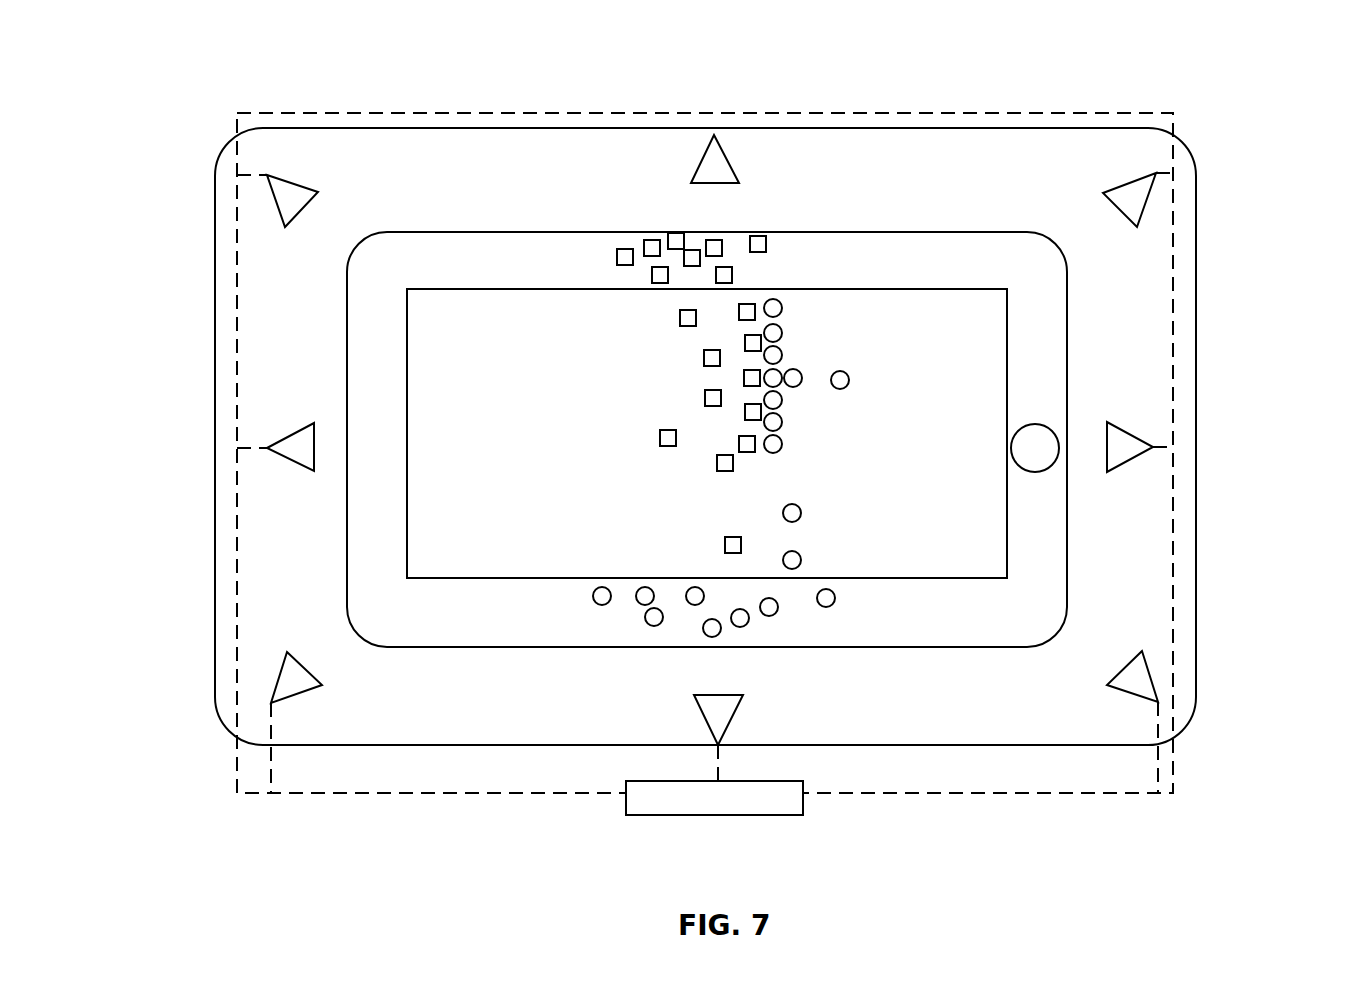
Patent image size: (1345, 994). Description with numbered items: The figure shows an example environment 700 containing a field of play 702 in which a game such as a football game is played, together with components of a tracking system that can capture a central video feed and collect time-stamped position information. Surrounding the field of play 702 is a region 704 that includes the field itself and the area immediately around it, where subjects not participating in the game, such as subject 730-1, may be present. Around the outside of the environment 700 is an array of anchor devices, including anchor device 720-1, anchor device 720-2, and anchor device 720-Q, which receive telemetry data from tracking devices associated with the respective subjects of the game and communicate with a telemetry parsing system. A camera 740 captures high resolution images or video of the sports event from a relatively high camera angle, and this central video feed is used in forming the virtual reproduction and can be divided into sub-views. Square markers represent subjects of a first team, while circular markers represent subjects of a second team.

The environment 700 is at (1076, 50).
The field of play 702 is at (1007, 333).
The region 704 is at (1067, 291).
The anchor device 720-1 is at (297, 188).
The anchor device 720-2 is at (729, 160).
The anchor device 720-Q is at (277, 452).
The subject 730-1 is at (766, 246).
The camera 740 is at (1044, 471).